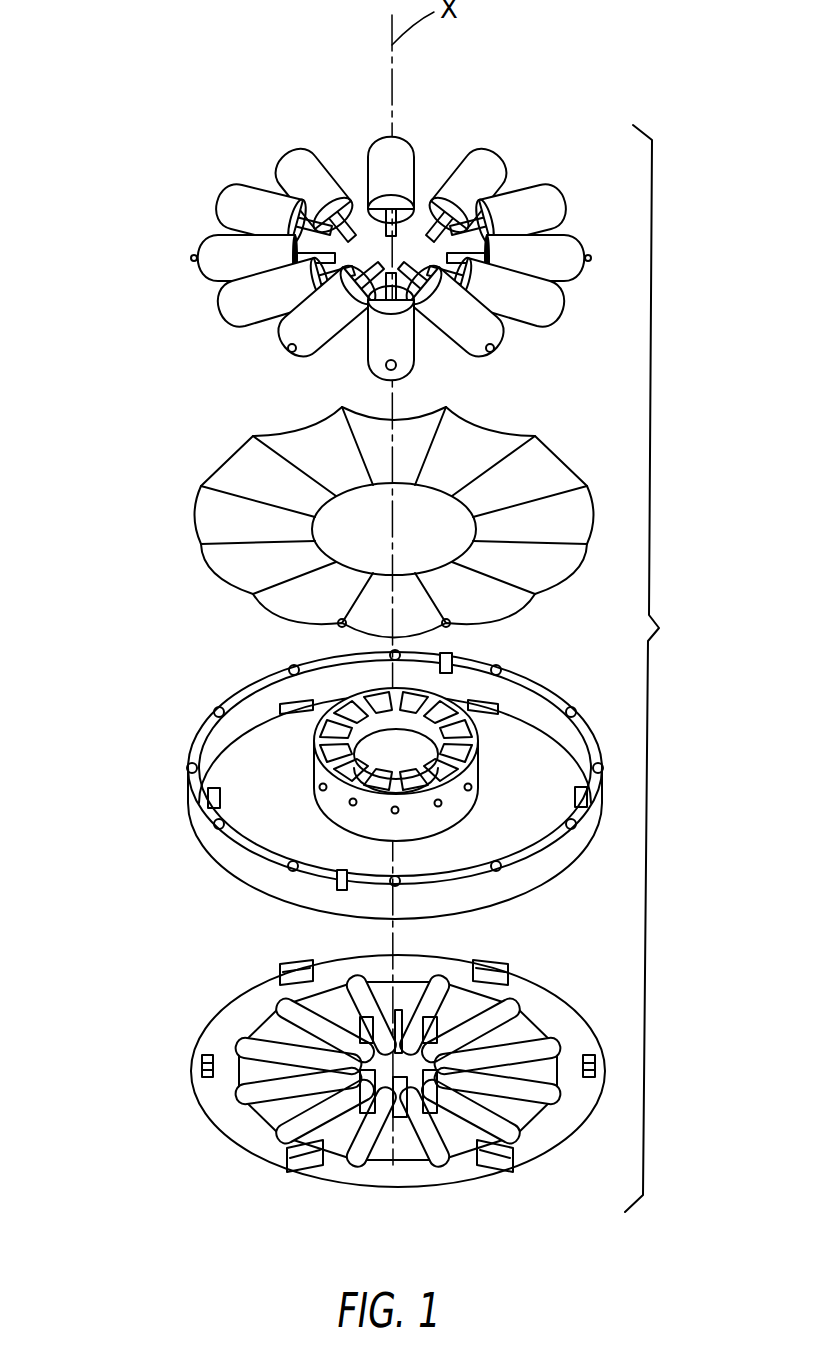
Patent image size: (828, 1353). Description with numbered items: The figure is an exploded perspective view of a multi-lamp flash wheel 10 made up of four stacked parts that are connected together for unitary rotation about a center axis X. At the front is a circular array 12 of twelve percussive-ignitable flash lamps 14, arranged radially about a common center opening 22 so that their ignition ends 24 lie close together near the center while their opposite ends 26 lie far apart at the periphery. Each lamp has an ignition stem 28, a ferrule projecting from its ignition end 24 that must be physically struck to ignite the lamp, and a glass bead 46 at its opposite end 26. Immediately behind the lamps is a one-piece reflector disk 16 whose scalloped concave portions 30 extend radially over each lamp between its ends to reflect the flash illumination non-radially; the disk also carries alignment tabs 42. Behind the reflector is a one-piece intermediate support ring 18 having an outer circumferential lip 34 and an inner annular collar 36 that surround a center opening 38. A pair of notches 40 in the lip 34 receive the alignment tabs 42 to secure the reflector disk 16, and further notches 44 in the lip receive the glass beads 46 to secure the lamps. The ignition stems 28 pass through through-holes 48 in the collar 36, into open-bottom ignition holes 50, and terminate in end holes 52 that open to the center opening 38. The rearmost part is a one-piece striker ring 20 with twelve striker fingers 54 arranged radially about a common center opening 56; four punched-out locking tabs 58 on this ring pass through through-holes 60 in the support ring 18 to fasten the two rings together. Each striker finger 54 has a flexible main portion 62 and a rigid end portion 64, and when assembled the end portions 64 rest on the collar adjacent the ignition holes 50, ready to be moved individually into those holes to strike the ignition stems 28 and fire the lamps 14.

The multi-lamp flash wheel 10 is at (662, 668).
The circular array 12 is at (182, 218).
The flash lamp 14 is at (330, 165).
The reflector disk 16 is at (172, 497).
The intermediate support ring 18 is at (152, 770).
The striker ring 20 is at (168, 1027).
The common center opening 22 is at (305, 175).
The ignition end 24 is at (443, 200).
The opposite end 26 is at (492, 153).
The ignition stem 28 is at (493, 297).
The scalloped portion 30 is at (245, 470).
The outer circumferential lip 34 is at (235, 850).
The inner annular collar 36 is at (447, 510).
The center opening 38 is at (420, 773).
The notch 40 is at (447, 658).
The alignment tab 42 is at (447, 405).
The notch 44 is at (222, 708).
The glass bead 46 is at (290, 348).
The through-hole 48 is at (353, 803).
The ignition hole 50 is at (378, 786).
The end hole 52 is at (375, 740).
The striker finger 54 is at (283, 1010).
The common center opening 56 is at (418, 1025).
The locking tab 58 is at (337, 1165).
The through-hole 60 is at (575, 792).
The flexible main portion 62 is at (267, 1110).
The rigid end portion 64 is at (390, 1140).